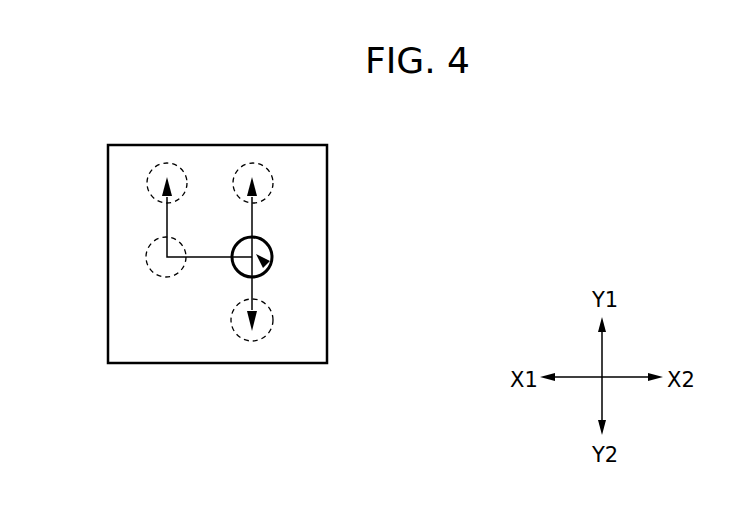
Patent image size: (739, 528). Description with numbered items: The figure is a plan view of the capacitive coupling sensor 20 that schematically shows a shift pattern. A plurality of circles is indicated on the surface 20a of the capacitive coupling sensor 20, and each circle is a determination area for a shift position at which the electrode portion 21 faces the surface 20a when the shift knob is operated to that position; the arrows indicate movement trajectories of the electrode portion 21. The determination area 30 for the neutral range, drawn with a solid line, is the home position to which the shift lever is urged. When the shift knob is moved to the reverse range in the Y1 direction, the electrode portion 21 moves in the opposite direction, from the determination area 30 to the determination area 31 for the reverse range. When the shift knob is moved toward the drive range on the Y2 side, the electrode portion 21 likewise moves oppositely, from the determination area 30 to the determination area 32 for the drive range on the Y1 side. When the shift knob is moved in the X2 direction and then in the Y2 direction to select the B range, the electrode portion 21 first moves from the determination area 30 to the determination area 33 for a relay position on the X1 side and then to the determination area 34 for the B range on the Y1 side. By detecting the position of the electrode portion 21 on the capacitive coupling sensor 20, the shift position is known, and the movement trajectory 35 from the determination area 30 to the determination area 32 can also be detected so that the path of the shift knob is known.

The capacitive coupling sensor 20 is at (327, 253).
The surface of the capacitive coupling sensor 20a is at (300, 317).
The electrode portion 21 is at (268, 264).
The determination area for the neutral range 30 is at (272, 250).
The determination area for the reverse range 31 is at (270, 337).
The determination area for the drive range 32 is at (273, 190).
The determination area for the relay position 33 is at (147, 267).
The determination area for the B range 34 is at (173, 166).
The movement trajectory 35 is at (253, 218).